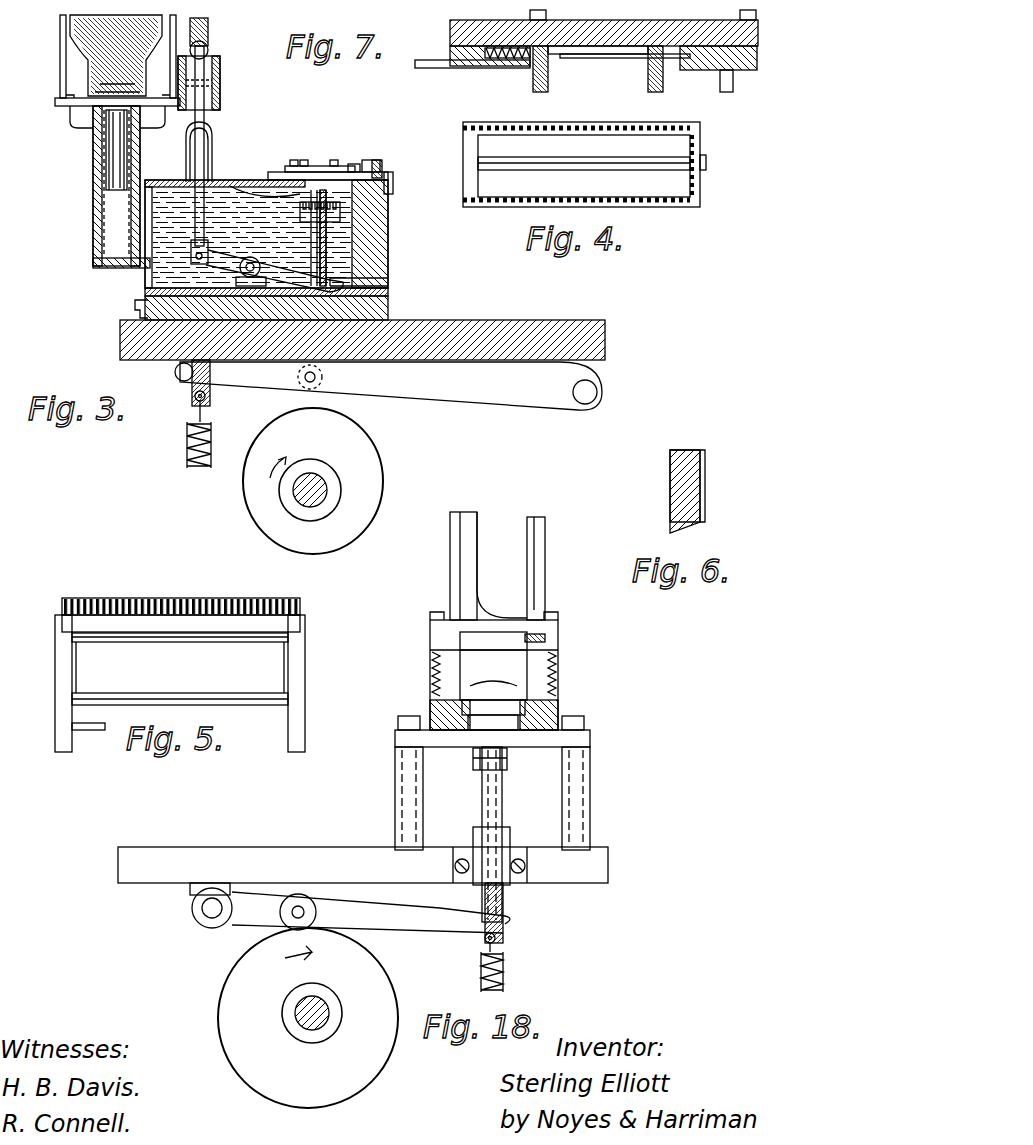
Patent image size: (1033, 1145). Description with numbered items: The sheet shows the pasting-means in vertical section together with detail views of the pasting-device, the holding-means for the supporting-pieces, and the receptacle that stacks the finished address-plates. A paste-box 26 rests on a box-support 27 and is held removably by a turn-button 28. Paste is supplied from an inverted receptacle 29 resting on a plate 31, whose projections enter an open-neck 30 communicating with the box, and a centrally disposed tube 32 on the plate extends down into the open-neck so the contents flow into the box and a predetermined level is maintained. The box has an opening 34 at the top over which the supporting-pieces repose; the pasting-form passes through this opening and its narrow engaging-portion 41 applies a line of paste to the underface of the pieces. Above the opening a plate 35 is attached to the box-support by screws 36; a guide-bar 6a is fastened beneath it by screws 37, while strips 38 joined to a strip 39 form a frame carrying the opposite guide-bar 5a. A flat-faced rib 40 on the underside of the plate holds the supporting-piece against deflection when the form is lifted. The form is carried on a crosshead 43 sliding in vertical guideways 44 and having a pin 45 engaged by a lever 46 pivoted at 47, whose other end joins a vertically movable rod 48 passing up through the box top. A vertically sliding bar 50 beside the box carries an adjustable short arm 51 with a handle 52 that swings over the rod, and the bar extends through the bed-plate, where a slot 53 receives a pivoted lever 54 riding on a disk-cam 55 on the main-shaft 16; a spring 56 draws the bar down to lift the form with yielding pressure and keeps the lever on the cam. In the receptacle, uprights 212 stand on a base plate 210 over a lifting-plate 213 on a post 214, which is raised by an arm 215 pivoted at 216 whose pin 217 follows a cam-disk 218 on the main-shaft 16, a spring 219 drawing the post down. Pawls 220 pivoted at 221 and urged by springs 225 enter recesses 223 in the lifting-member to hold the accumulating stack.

In FIG. 3, the receptacle 29 is at (86, 40).
In FIG. 3, the plate 31 is at (85, 104).
In FIG. 3, the open-neck 30 is at (93, 152).
In FIG. 3, the tube 32 is at (108, 178).
In FIG. 3, the box-support 27 is at (384, 262).
In FIG. 3, the turn-button 28 is at (146, 294).
In FIG. 3, the pin 45 is at (386, 272).
In FIG. 5, the pin 45 is at (92, 732).
In FIG. 3, the vertical guideways 44 is at (360, 240).
In FIG. 3, the crosshead 43 is at (352, 226).
In FIG. 4, the crosshead 43 is at (648, 160).
In FIG. 5, the crosshead 43 is at (276, 664).
In FIG. 3, the opening 34 is at (344, 208).
In FIG. 3, the lever 46 is at (282, 272).
In FIG. 3, the pivot 47 is at (262, 252).
In FIG. 3, the handle 52 is at (203, 50).
In FIG. 3, the short arm 51 is at (204, 80).
In FIG. 3, the vertically movable rod 48 is at (205, 128).
In FIG. 3, the vertically sliding bar 50 is at (212, 128).
In FIG. 3, the engaging-portion 41 is at (244, 188).
In FIG. 4, the engaging-portion 41 is at (700, 184).
In FIG. 6, the engaging-portion 41 is at (684, 452).
In FIG. 5, the engaging-portion 41 is at (232, 602).
In FIG. 3, the paste-box 26 is at (270, 176).
In FIG. 7, the paste-box 26 is at (490, 68).
In FIG. 3, the grooved guide-bar 5a is at (325, 170).
In FIG. 7, the grooved guide-bar 5a is at (452, 70).
In FIG. 3, the strip 39 is at (300, 168).
In FIG. 7, the strip 39 is at (470, 48).
In FIG. 3, the strips 38 is at (334, 168).
In FIG. 7, the strips 38 is at (618, 58).
In FIG. 3, the screws 37 is at (354, 168).
In FIG. 7, the screws 37 is at (734, 30).
In FIG. 3, the plate 35 is at (374, 164).
In FIG. 7, the plate 35 is at (586, 56).
In FIG. 3, the screws 36 is at (384, 166).
In FIG. 3, the grooved guide-bar 6a is at (394, 178).
In FIG. 7, the grooved guide-bar 6a is at (734, 70).
In FIG. 7, the flat-faced rib 40 is at (540, 60).
In FIG. 3, the slot 53 is at (194, 396).
In FIG. 3, the spring 56 is at (185, 466).
In FIG. 3, the pivoted lever 54 is at (436, 388).
In FIG. 3, the disk-cam 55 is at (258, 490).
In FIG. 3, the main-shaft 16 is at (320, 485).
In FIG. 18, the main-shaft 16 is at (320, 1010).
In FIG. 18, the uprights 212 is at (452, 586).
In FIG. 18, the pawls 220 is at (430, 690).
In FIG. 18, the springs 225 is at (428, 662).
In FIG. 18, the lifting-plate 213 is at (520, 700).
In FIG. 18, the recesses 223 is at (478, 712).
In FIG. 18, the plate 210 is at (560, 730).
In FIG. 18, the pivot 221 is at (506, 750).
In FIG. 18, the post 214 is at (494, 810).
In FIG. 18, the arm 215 is at (440, 918).
In FIG. 18, the pivot 216 is at (200, 914).
In FIG. 18, the pin 217 is at (290, 920).
In FIG. 18, the cam-disk 218 is at (272, 1080).
In FIG. 18, the spring 219 is at (506, 972).